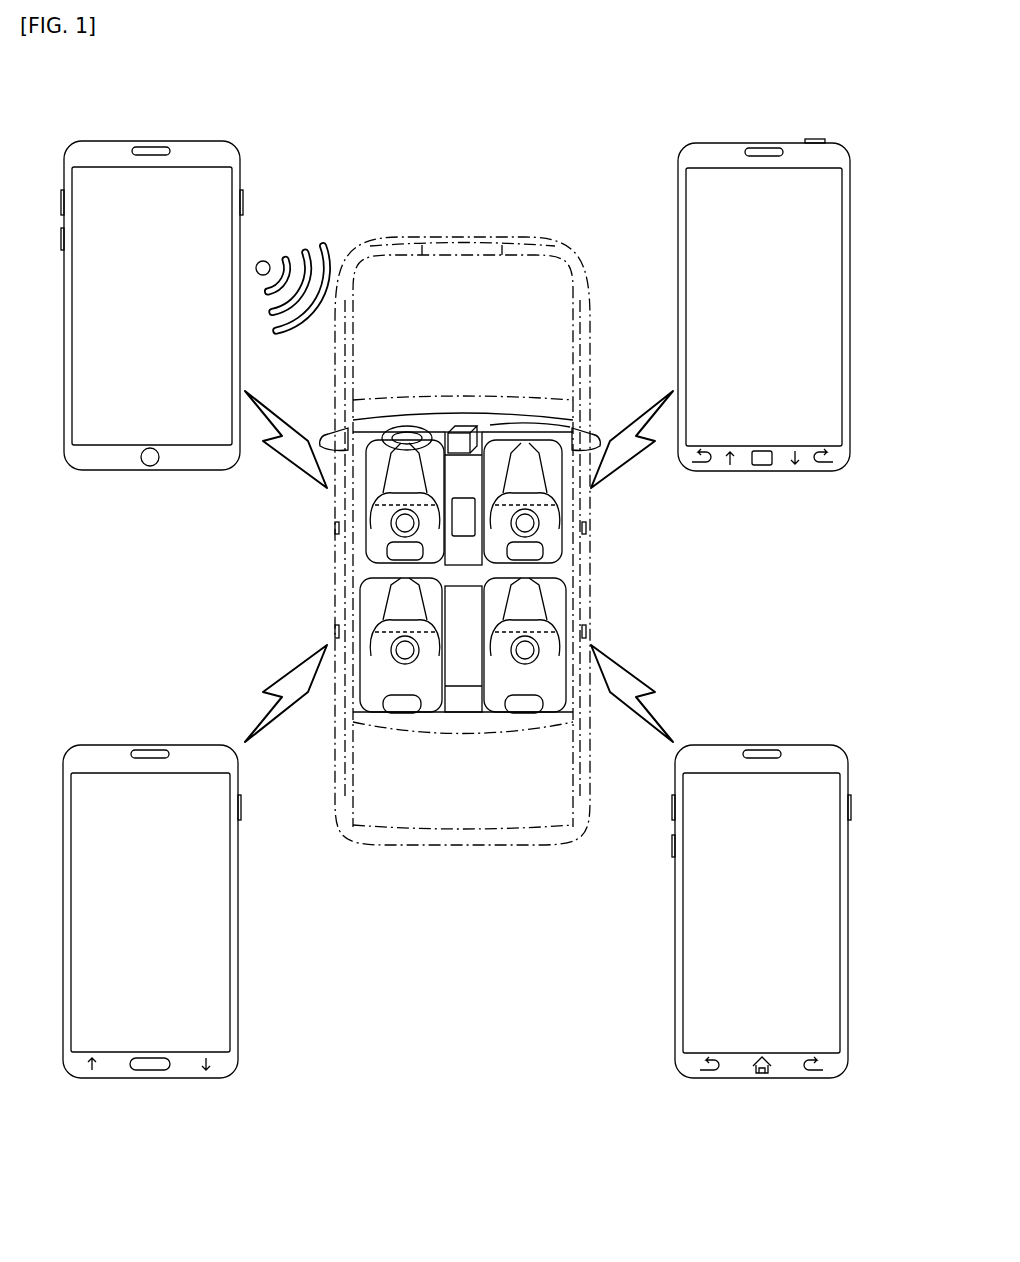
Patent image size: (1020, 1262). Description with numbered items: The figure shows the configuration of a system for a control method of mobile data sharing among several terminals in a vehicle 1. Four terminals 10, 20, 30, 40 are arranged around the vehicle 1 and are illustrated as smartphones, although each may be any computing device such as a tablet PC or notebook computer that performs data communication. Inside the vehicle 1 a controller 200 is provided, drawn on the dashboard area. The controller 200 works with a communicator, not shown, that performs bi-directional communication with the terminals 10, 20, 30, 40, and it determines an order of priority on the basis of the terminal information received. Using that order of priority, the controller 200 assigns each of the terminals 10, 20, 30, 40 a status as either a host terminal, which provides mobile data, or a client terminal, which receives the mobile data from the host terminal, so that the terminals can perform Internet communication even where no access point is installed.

The vehicle 1 is at (475, 207).
The terminal 10 is at (249, 136).
The terminal 20 is at (666, 138).
The terminal 30 is at (247, 1092).
The terminal 40 is at (665, 1091).
The controller 200 is at (456, 425).